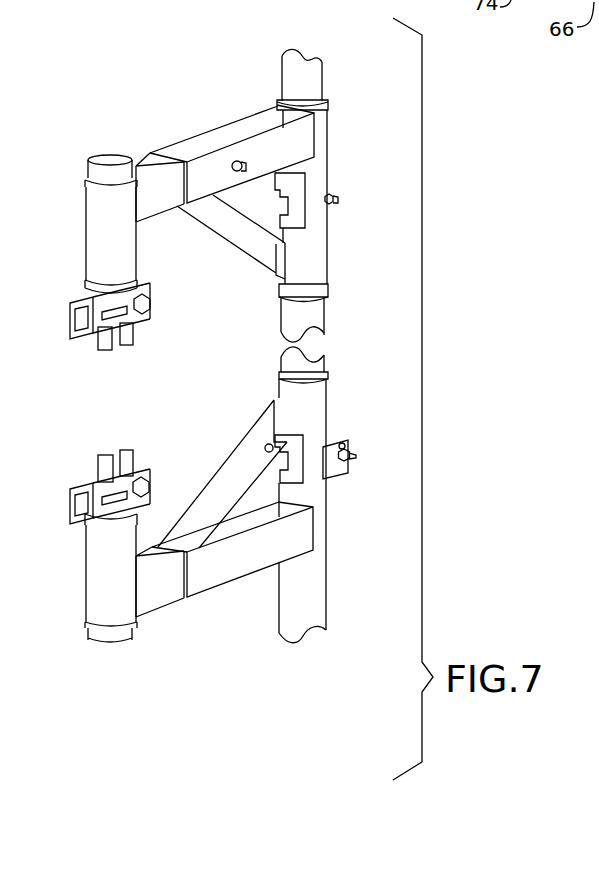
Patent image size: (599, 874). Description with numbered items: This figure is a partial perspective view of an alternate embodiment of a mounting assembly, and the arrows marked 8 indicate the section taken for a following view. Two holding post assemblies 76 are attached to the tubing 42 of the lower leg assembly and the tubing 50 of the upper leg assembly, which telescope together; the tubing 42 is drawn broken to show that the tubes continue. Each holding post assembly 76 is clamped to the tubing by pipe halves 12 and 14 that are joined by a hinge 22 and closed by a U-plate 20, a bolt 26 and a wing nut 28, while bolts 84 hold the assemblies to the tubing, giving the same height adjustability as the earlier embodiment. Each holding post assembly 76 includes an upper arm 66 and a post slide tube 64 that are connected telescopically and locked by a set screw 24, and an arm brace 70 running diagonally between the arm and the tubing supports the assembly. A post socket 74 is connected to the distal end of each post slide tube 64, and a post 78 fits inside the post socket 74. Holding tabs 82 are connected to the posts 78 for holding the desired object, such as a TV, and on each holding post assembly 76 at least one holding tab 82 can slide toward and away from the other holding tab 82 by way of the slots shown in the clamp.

The section line 8- 8 is at (307, 72).
The pipe half 12 is at (318, 235).
The pipe half 14 is at (318, 527).
The U-plate 20 is at (337, 467).
The hinge 22 is at (296, 190).
The set screw 24 is at (236, 160).
The bolt 26 is at (352, 457).
The wing nut 28 is at (341, 444).
The tubing 42 is at (318, 320).
The tubing 50 is at (313, 82).
The post slide tube 64 is at (152, 205).
The upper arm 66 is at (247, 122).
The arm brace 70 is at (268, 248).
The post socket 74 is at (107, 230).
The holding post assembly 76 is at (106, 354).
The post 78 is at (115, 637).
The holding tab 82 is at (132, 343).
The bolt 84 is at (337, 197).